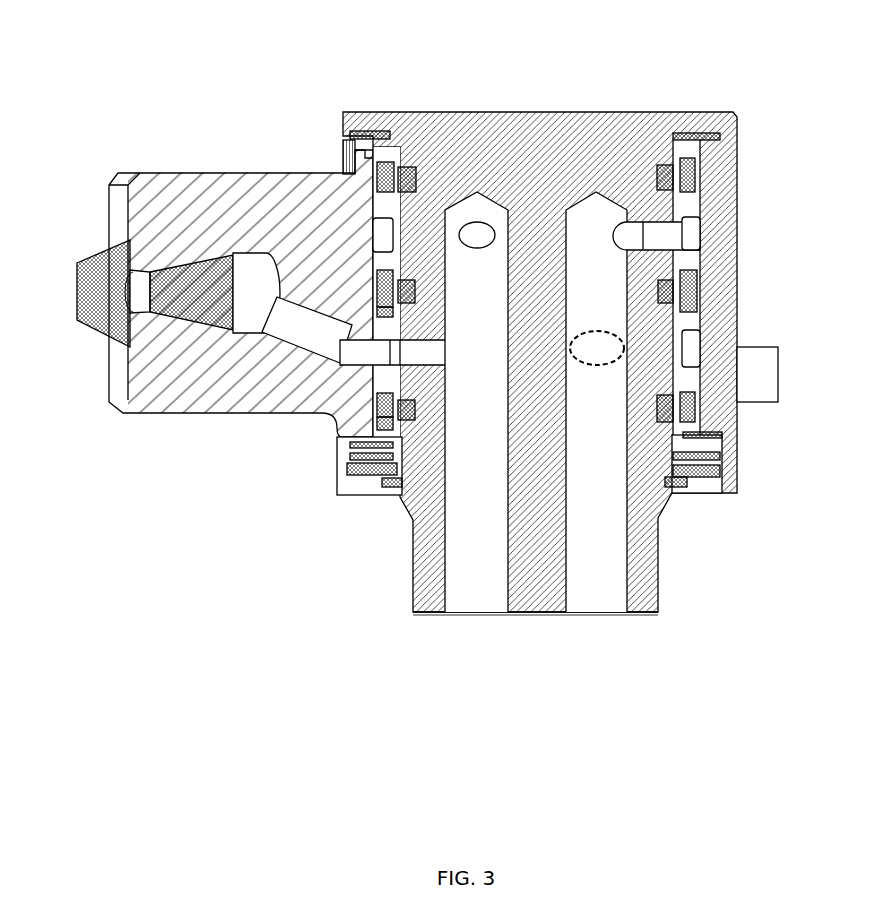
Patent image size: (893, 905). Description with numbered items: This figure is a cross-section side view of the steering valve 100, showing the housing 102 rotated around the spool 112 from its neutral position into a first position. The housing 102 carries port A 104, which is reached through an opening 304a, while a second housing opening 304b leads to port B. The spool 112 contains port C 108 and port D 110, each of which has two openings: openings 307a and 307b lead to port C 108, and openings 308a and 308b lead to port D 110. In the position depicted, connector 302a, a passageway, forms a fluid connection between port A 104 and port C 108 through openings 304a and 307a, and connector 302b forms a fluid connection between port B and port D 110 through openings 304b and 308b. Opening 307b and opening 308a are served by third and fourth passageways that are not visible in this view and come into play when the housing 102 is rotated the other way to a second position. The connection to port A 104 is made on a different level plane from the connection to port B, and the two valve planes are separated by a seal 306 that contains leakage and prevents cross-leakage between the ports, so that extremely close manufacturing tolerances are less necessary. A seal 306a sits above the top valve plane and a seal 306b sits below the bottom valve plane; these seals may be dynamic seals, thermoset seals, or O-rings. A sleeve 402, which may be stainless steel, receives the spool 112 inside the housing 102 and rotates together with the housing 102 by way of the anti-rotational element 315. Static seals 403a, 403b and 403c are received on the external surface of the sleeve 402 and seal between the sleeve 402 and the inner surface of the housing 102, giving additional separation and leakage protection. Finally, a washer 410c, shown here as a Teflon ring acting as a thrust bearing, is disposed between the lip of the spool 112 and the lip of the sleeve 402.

The steering valve 100 is at (453, 350).
The housing 102 is at (167, 405).
The port A 104 is at (302, 342).
The port C 108 is at (467, 590).
The port D 110 is at (603, 587).
The spool 112 is at (535, 120).
The connector 302a is at (437, 358).
The connector 302b is at (665, 290).
The opening 304a is at (383, 350).
The opening 304b is at (662, 238).
The seal 306 is at (640, 237).
The seal 306a is at (668, 178).
The seal 306b is at (667, 412).
The opening 307a is at (410, 347).
The opening 307b is at (477, 233).
The opening 308a is at (583, 352).
The opening 308b is at (735, 266).
The anti-rotational element 315 is at (342, 165).
The sleeve 402 is at (688, 382).
The seal 403a is at (388, 178).
The seal 403b is at (390, 307).
The seal 403c is at (376, 343).
The washer 410c is at (385, 133).